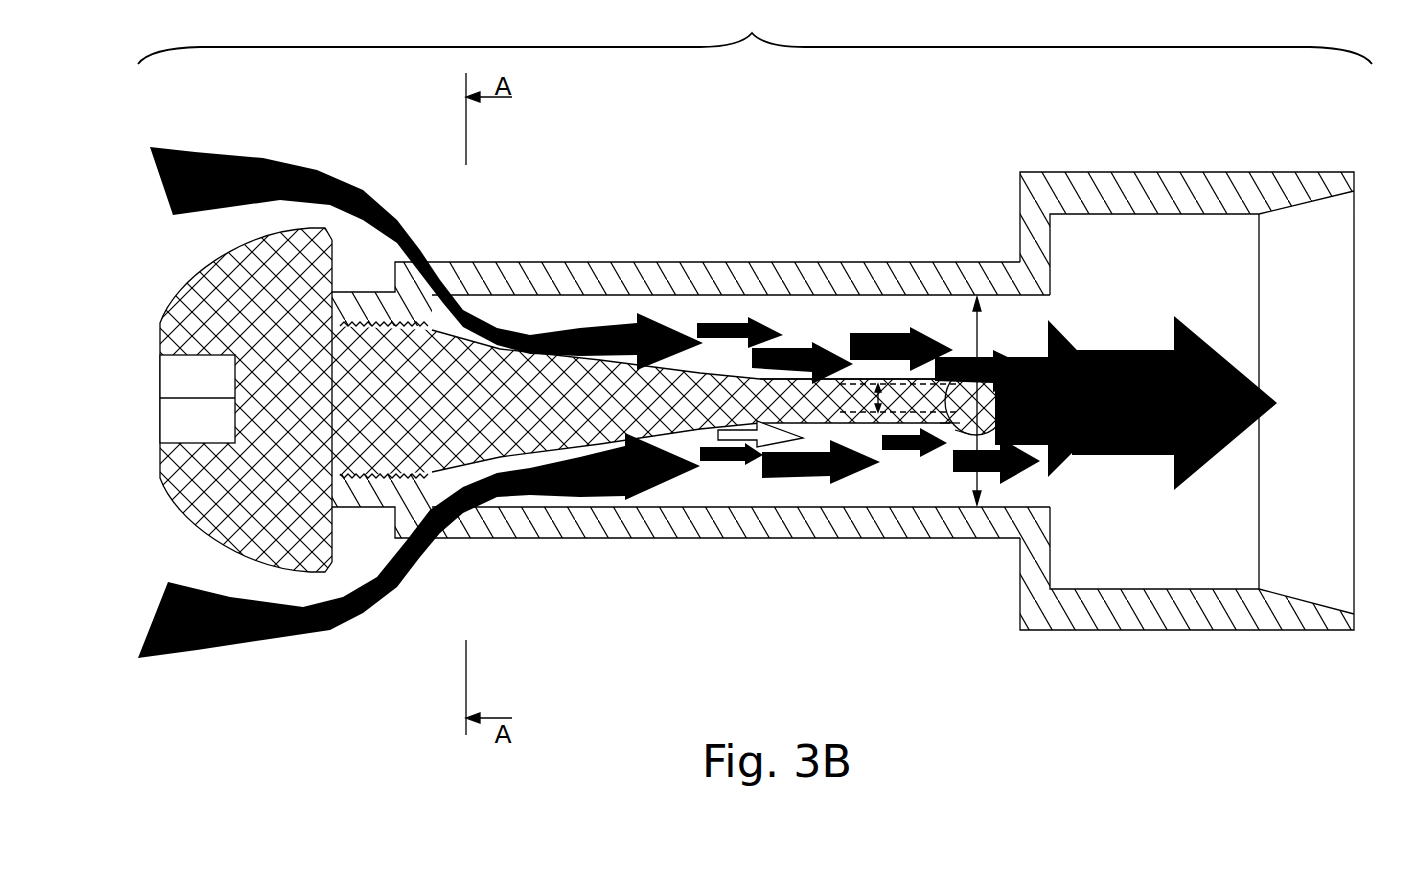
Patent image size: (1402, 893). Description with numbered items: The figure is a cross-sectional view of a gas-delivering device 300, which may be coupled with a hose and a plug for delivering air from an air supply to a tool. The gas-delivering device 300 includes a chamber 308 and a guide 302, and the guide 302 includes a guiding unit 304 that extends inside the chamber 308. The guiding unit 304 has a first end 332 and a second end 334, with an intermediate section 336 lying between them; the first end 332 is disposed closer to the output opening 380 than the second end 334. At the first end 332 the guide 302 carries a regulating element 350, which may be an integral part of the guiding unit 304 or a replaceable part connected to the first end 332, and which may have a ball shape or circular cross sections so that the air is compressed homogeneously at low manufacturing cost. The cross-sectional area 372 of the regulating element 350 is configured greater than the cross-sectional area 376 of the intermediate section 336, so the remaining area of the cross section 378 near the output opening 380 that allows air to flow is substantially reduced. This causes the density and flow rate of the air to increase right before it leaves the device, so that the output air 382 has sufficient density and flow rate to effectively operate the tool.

The gas-delivering device 300 is at (755, 32).
The guide 302 is at (172, 520).
The guiding unit 304 is at (558, 433).
The chamber 308 is at (672, 272).
The first end 332 is at (943, 417).
The second end 334 is at (433, 327).
The intermediate section 336 is at (878, 384).
The regulating element 350 is at (962, 435).
The cross-sectional area 372 is at (963, 360).
The cross-sectional area 376 is at (862, 380).
The cross section 378 is at (977, 430).
The output opening 380 is at (1050, 323).
The output air 382 is at (1082, 395).